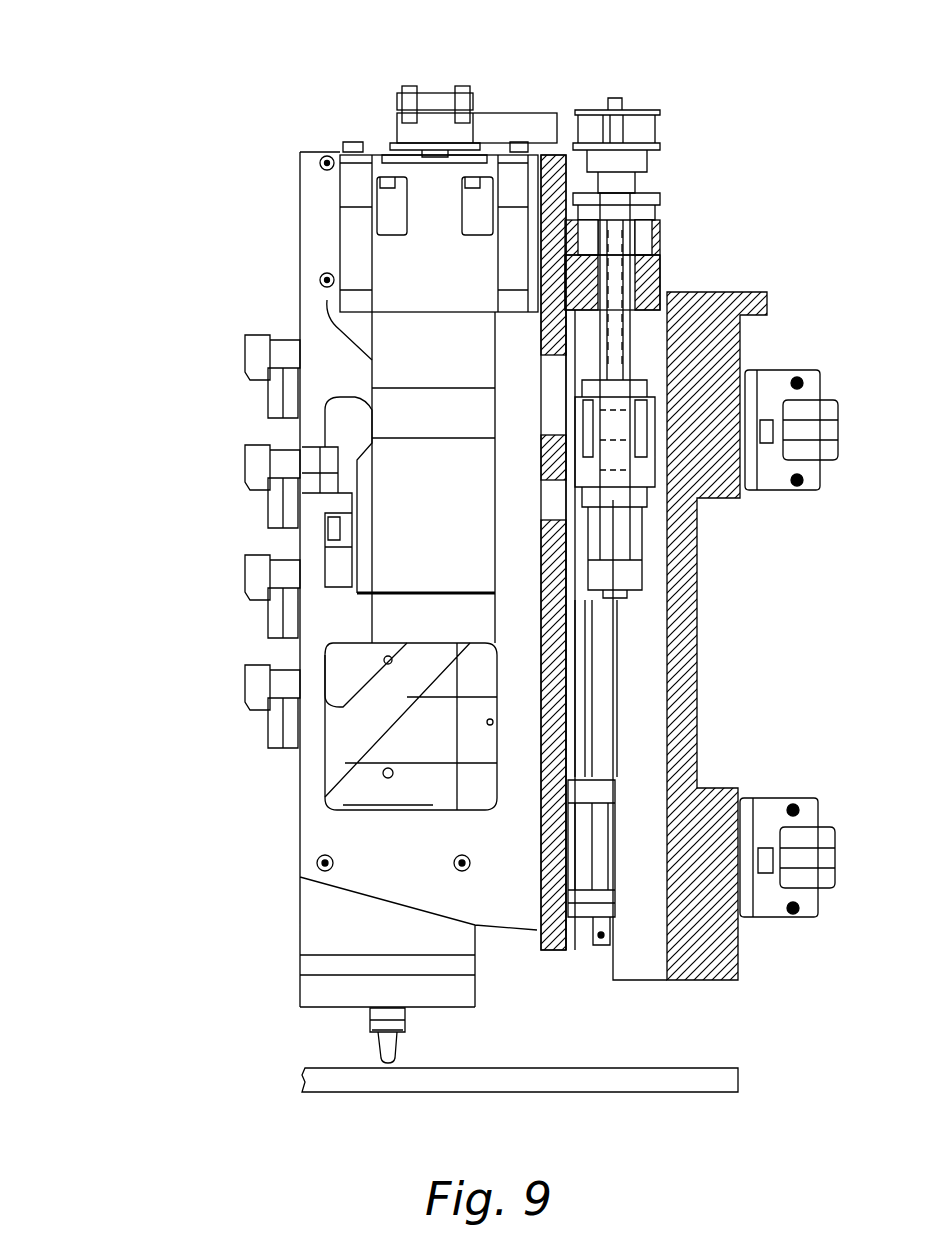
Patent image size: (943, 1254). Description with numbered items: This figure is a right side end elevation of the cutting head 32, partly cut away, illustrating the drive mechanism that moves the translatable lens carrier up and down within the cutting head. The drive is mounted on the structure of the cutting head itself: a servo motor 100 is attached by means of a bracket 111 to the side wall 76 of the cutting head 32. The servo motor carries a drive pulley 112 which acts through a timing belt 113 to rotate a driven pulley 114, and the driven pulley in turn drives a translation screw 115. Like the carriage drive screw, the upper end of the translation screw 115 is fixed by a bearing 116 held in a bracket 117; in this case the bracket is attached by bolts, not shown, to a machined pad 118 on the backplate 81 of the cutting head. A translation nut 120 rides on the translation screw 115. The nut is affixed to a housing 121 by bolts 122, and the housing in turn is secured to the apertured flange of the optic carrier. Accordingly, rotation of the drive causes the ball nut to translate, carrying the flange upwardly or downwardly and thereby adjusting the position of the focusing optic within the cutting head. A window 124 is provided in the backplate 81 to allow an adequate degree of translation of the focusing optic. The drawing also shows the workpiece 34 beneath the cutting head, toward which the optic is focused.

The cutting head 32 is at (185, 607).
The workpiece 34 is at (255, 1045).
The side wall 76 is at (337, 745).
The rear wall 81 is at (557, 147).
The servo motor 100 is at (383, 620).
The bracket 111 is at (353, 250).
The drive pulley 112 is at (393, 115).
The timing belt 113 is at (510, 123).
The driven pulley 114 is at (643, 110).
The translation screw 115 is at (633, 338).
The bearing 116 is at (662, 200).
The bracket 117 is at (662, 257).
The machined pad 118 is at (553, 290).
The translation nut 120 is at (658, 408).
The housing 121 is at (642, 480).
The bolts 122 is at (700, 357).
The window 124 is at (547, 500).